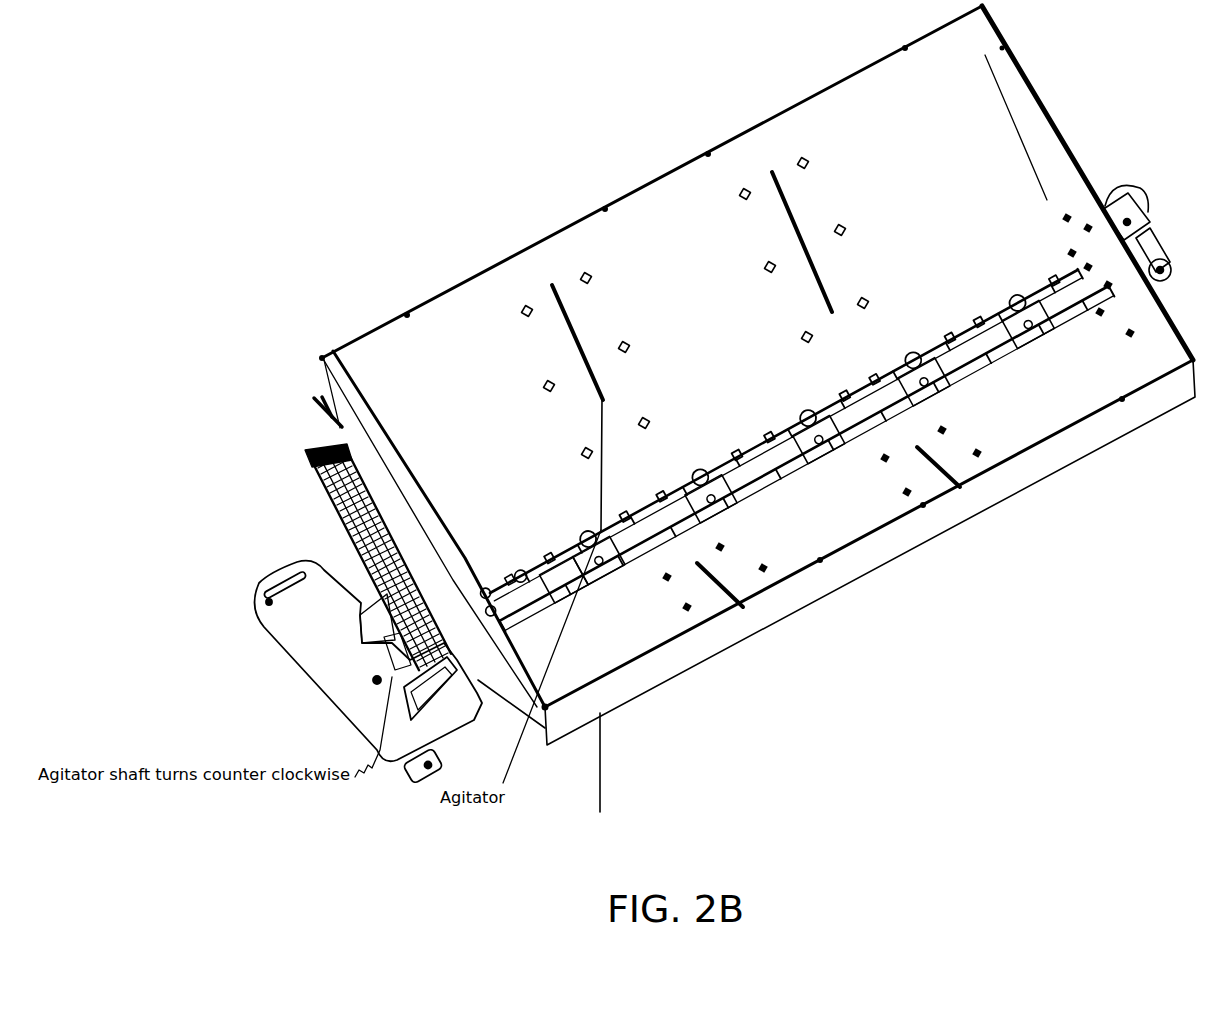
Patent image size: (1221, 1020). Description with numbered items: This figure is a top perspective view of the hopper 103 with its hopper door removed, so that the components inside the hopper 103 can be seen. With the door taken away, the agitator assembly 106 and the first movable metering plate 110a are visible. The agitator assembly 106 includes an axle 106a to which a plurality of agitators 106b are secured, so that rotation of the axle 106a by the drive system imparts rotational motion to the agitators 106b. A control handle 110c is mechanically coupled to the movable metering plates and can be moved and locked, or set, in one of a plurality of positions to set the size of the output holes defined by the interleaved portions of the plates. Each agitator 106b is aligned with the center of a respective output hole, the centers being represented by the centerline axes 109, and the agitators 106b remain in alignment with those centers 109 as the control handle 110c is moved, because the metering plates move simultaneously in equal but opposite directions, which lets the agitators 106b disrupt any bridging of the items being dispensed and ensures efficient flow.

The hopper 103 is at (284, 136).
The agitator assembly 106 is at (780, 458).
The axle 106a is at (563, 575).
The agitators 106b is at (1018, 296).
The centerline axes 109 is at (602, 779).
The first movable metering plate 110a is at (706, 520).
The control handle 110c is at (407, 771).